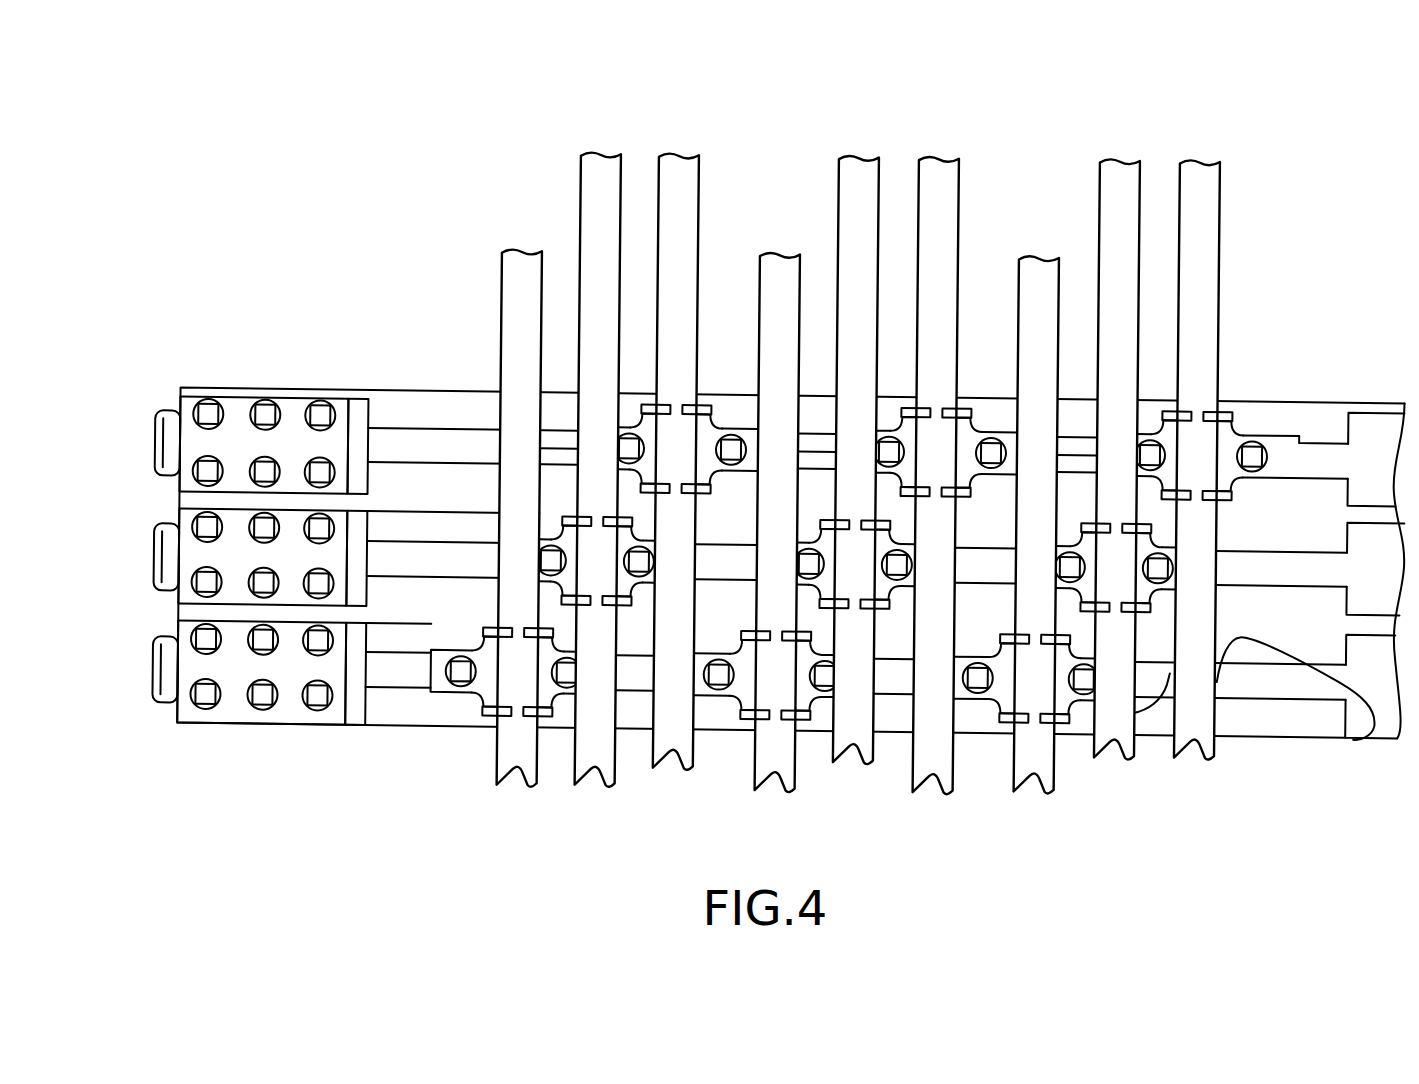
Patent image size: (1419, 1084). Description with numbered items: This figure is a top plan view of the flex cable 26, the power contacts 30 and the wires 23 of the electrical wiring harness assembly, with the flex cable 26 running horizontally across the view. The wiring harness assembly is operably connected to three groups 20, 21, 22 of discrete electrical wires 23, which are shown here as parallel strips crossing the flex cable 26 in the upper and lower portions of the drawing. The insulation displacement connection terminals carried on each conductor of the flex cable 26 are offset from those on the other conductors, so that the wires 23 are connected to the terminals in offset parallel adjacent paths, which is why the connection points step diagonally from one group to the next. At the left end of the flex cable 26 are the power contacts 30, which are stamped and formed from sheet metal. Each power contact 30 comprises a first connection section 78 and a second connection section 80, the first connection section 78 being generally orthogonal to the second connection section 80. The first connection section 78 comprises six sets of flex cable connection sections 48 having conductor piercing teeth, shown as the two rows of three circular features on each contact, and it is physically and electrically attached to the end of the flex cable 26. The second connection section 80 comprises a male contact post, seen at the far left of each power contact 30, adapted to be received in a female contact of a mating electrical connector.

The group of discrete electrical wires 20 is at (706, 105).
The group of discrete electrical wires 21 is at (754, 103).
The group of discrete electrical wires 22 is at (1014, 103).
The wires 23 is at (655, 157).
The flex cable 26 is at (405, 732).
The power contacts 30 is at (234, 437).
The flex cable connection sections 48 is at (321, 477).
The first connection section 78 is at (291, 413).
The second connection section 80 is at (178, 500).